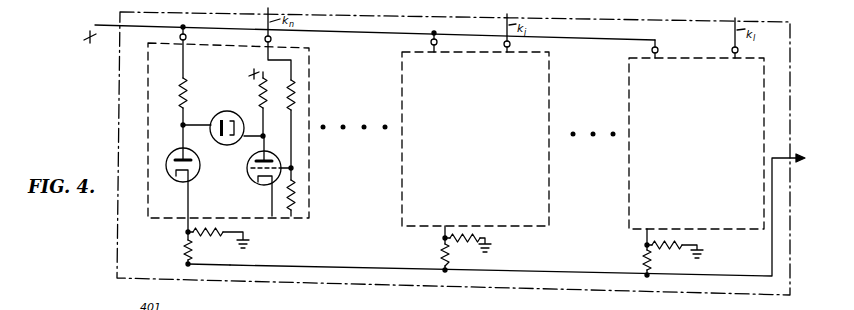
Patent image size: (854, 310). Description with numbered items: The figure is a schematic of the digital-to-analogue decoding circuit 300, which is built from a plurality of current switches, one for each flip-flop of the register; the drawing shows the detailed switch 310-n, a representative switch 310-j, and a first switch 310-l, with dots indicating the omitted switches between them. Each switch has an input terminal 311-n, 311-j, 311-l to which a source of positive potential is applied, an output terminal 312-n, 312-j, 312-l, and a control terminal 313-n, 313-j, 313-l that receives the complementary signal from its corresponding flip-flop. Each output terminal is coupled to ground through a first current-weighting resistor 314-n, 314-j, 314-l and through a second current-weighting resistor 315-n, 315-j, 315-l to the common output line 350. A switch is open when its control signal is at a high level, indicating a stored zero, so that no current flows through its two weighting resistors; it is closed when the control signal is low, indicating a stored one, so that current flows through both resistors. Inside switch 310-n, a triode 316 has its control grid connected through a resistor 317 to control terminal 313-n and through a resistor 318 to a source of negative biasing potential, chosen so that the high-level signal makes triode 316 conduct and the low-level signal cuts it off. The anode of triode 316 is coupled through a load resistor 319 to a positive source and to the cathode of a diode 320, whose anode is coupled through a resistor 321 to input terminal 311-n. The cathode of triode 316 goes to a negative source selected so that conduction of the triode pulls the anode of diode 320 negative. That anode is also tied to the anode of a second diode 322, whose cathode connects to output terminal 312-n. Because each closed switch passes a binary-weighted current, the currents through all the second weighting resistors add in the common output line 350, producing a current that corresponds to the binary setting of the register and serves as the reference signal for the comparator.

The decoding circuit 300 is at (122, 92).
The current switch 310-n is at (146, 202).
The current switch 310-j is at (404, 197).
The current switch 310-l is at (642, 198).
The input terminal 311-n is at (187, 39).
The input terminal 311-j is at (431, 42).
The input terminal 311-l is at (660, 50).
The output terminal 312-n is at (186, 250).
The output terminal 312-j is at (444, 238).
The output terminal 312-l is at (645, 246).
The control terminal 313-n is at (272, 40).
The control terminal 313-j is at (511, 47).
The control terminal 313-l is at (739, 50).
The first current-weighting resistor 314-n is at (226, 228).
The first current-weighting resistor 314-j is at (462, 230).
The first current-weighting resistor 314-l is at (665, 240).
The second current-weighting resistor 315-n is at (200, 266).
The second current-weighting resistor 315-j is at (452, 268).
The second current-weighting resistor 315-l is at (645, 262).
The triode 316 is at (248, 170).
The resistor 317 is at (296, 95).
The resistor 318 is at (296, 186).
The load resistor 319 is at (268, 92).
The diode 320 is at (219, 112).
The resistor 321 is at (188, 78).
The second diode 322 is at (171, 178).
The common output line 350 is at (316, 266).